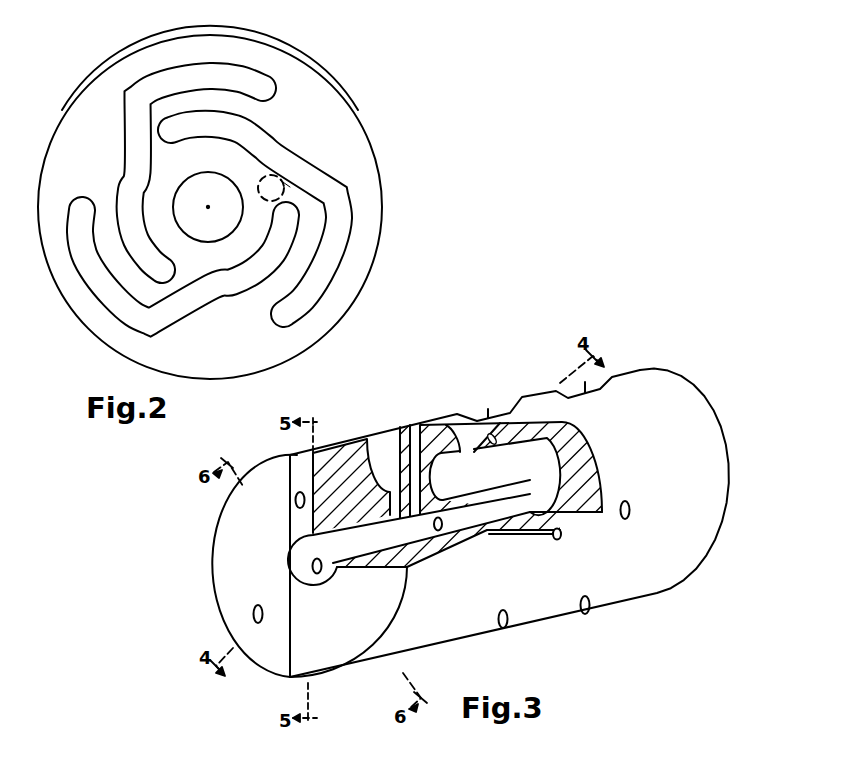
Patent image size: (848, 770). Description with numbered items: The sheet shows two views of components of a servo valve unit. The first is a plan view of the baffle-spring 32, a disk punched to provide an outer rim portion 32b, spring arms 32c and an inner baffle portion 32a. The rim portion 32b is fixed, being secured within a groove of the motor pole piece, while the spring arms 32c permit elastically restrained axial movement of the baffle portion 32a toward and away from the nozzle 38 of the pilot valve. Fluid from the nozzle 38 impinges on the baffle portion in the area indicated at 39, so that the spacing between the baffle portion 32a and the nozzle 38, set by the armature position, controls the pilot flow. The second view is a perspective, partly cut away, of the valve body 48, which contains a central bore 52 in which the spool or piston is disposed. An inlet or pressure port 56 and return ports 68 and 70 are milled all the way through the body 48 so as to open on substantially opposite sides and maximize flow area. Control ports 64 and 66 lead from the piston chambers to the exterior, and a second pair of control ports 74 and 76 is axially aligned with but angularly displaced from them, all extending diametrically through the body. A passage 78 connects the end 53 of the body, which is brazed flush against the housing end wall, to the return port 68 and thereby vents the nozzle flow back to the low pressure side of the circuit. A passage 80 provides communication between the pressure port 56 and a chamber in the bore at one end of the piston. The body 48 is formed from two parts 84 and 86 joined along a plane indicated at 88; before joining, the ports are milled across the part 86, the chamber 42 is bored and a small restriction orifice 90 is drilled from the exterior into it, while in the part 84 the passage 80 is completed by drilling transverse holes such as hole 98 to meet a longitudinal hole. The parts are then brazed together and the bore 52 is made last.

In FIG. 2, the baffle-spring 32 is at (140, 48).
In FIG. 2, the baffle portion 32a is at (227, 257).
In FIG. 2, the outer rim portion 32b is at (262, 53).
In FIG. 2, the spring arms 32c is at (307, 252).
In FIG. 2, the nozzle 38 is at (287, 192).
In FIG. 2, the impingement area 39 is at (283, 186).
In FIG. 3, the chamber 42 is at (540, 457).
In FIG. 3, the valve body 48 is at (638, 598).
In FIG. 3, the central bore 52 is at (290, 557).
In FIG. 3, the end of the valve body 53 is at (337, 660).
In FIG. 3, the inlet or pressure port 56 is at (480, 411).
In FIG. 3, the control port 64 is at (433, 529).
In FIG. 3, the control port 66 is at (626, 519).
In FIG. 3, the return port 68 is at (381, 436).
In FIG. 3, the return port 70 is at (562, 390).
In FIG. 3, the control port 74 is at (504, 629).
In FIG. 3, the control port 76 is at (585, 614).
In FIG. 3, the passage 78 is at (295, 500).
In FIG. 3, the passage 80 is at (260, 605).
In FIG. 3, the valve body part 84 is at (222, 584).
In FIG. 3, the valve body part 86 is at (398, 651).
In FIG. 3, the joining plane 88 is at (292, 628).
In FIG. 3, the restriction orifice 90 is at (497, 433).
In FIG. 3, the transverse hole 98 is at (323, 563).